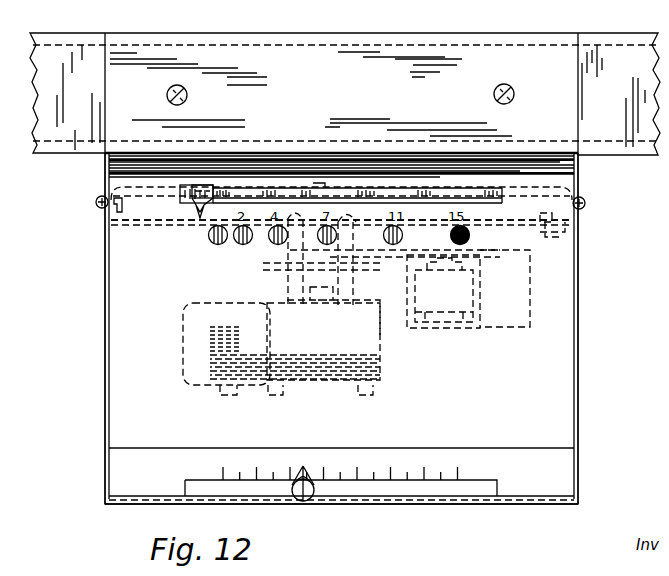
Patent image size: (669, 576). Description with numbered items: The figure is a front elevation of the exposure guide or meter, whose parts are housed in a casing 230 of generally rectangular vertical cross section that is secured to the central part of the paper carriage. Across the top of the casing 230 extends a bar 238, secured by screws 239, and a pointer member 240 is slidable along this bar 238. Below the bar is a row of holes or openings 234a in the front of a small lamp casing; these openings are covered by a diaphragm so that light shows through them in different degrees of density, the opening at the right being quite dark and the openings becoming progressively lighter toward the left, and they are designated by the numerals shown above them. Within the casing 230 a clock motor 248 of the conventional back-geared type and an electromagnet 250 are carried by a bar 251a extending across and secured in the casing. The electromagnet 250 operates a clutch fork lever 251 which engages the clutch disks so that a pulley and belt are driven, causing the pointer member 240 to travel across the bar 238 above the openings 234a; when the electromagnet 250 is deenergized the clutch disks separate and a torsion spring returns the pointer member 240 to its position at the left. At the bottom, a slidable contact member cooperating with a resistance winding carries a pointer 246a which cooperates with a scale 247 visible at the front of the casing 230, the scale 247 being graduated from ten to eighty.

The bar 238 is at (274, 190).
The screws 239 is at (97, 203).
The casing 230 is at (578, 236).
The pointer member 240 is at (198, 221).
The bar 251a is at (137, 222).
The holes or openings 234a is at (247, 247).
The clutch fork lever 251 is at (470, 251).
The electromagnet 250 is at (470, 306).
The clock motor 248 is at (373, 343).
The scale 247 is at (410, 455).
The pointer 246a is at (308, 469).